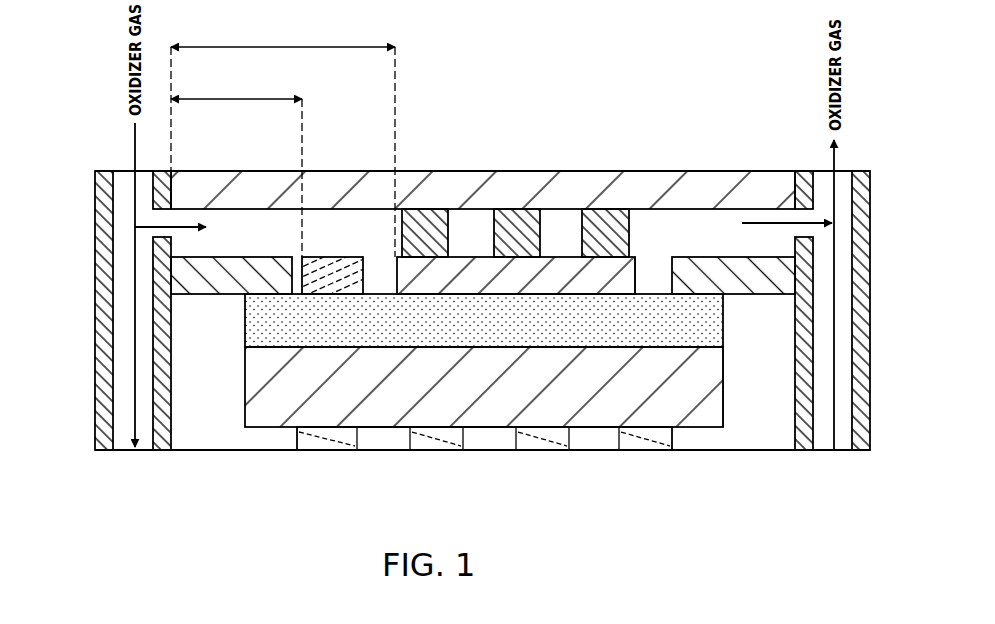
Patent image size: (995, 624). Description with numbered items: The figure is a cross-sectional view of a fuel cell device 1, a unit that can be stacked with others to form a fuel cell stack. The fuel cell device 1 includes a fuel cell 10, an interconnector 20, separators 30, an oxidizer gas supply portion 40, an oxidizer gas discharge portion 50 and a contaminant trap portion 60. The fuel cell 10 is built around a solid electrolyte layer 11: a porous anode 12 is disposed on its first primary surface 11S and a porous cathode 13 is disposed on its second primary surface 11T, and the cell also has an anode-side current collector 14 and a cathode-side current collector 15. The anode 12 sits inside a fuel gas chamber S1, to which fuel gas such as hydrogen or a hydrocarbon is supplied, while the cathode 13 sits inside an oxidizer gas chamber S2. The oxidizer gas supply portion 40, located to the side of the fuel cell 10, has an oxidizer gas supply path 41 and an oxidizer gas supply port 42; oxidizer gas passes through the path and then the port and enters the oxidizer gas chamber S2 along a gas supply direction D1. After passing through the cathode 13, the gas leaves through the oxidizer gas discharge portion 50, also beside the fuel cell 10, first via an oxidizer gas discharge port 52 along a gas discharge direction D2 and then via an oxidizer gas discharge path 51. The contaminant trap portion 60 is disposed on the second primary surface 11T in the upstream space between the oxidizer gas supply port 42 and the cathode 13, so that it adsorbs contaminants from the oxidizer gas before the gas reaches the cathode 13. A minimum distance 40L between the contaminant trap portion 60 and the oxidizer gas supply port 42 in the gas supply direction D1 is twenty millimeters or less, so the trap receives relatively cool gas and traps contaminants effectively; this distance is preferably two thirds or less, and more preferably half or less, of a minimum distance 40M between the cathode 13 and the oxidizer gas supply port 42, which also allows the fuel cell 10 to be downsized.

The fuel cell device 1 is at (742, 73).
The fuel cell 10 is at (729, 389).
The solid electrolyte layer 11 is at (401, 340).
The first primary surface 11S is at (606, 353).
The second primary surface 11T is at (651, 289).
The anode 12 is at (497, 415).
The cathode 13 is at (472, 270).
The anode-side current collector 14 is at (637, 446).
The cathode-side current collector 15 is at (513, 221).
The interconnector 20 is at (665, 198).
The separator 30 is at (183, 276).
The oxidizer gas supply portion 40 is at (108, 169).
The minimum distance 40L is at (243, 99).
The minimum distance 40M is at (300, 47).
The oxidizer gas supply path 41 is at (122, 436).
The oxidizer gas supply port 42 is at (168, 221).
The oxidizer gas discharge portion 50 is at (803, 166).
The oxidizer gas discharge path 51 is at (820, 439).
The oxidizer gas discharge port 52 is at (792, 215).
The contaminant trap portion 60 is at (313, 284).
The fuel gas chamber S1 is at (197, 388).
The oxidizer gas chamber S2 is at (291, 252).
The gas supply direction D1 is at (173, 243).
The gas discharge direction D2 is at (787, 241).